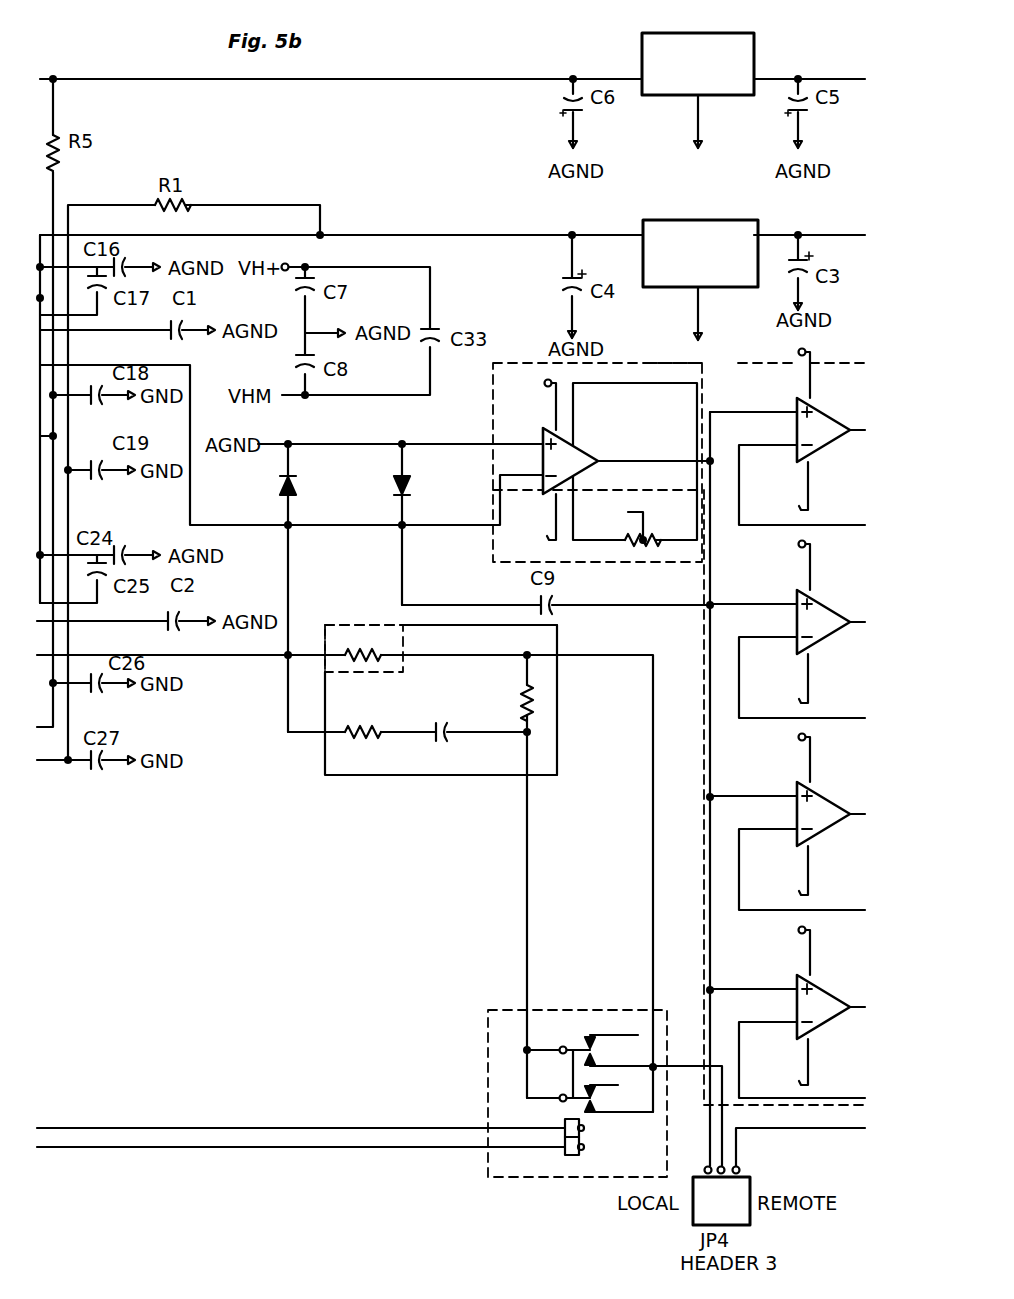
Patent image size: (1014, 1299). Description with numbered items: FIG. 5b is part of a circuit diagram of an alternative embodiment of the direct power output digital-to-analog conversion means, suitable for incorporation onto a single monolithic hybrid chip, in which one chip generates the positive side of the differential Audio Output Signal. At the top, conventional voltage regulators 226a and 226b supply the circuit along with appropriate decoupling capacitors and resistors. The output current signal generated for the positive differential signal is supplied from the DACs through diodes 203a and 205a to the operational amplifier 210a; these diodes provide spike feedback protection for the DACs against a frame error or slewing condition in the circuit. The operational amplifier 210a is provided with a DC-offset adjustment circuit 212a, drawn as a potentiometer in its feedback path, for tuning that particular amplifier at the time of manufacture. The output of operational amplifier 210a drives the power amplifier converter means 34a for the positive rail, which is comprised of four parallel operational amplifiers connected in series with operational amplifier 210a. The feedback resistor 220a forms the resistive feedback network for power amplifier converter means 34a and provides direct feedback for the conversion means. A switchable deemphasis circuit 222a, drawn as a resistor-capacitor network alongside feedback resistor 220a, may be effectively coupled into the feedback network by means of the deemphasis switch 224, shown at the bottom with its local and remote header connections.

The voltage regulator 226a is at (642, 40).
The voltage regulator 226b is at (643, 222).
The operational amplifier 210a is at (587, 472).
The diode 203a is at (299, 497).
The diode 205a is at (400, 497).
The DC-offset adjustment circuit 212a is at (705, 548).
The feedback resistor 220a is at (333, 662).
The switchable deemphasis circuit 222a is at (325, 775).
The power amplifier converter means 34a is at (704, 825).
The deemphasis switch 224 is at (490, 1028).